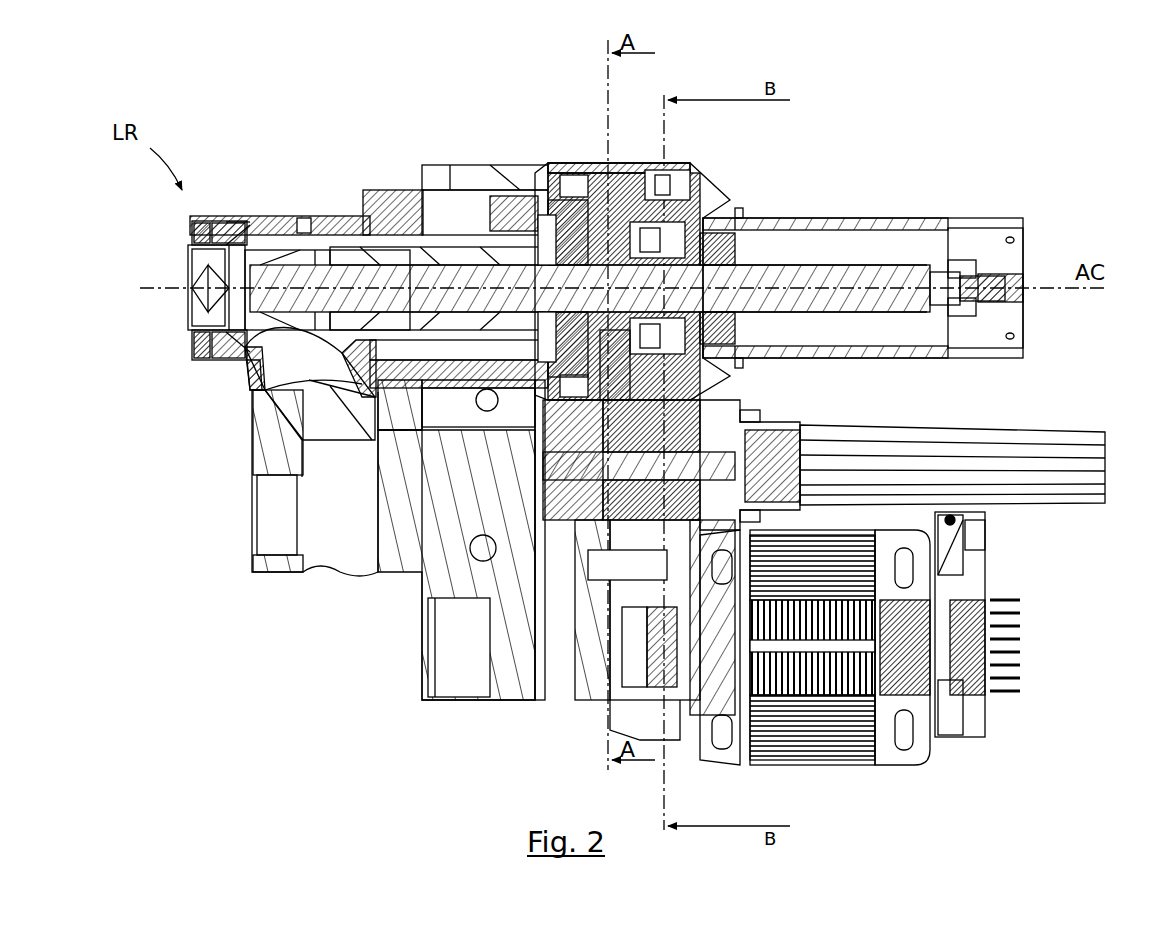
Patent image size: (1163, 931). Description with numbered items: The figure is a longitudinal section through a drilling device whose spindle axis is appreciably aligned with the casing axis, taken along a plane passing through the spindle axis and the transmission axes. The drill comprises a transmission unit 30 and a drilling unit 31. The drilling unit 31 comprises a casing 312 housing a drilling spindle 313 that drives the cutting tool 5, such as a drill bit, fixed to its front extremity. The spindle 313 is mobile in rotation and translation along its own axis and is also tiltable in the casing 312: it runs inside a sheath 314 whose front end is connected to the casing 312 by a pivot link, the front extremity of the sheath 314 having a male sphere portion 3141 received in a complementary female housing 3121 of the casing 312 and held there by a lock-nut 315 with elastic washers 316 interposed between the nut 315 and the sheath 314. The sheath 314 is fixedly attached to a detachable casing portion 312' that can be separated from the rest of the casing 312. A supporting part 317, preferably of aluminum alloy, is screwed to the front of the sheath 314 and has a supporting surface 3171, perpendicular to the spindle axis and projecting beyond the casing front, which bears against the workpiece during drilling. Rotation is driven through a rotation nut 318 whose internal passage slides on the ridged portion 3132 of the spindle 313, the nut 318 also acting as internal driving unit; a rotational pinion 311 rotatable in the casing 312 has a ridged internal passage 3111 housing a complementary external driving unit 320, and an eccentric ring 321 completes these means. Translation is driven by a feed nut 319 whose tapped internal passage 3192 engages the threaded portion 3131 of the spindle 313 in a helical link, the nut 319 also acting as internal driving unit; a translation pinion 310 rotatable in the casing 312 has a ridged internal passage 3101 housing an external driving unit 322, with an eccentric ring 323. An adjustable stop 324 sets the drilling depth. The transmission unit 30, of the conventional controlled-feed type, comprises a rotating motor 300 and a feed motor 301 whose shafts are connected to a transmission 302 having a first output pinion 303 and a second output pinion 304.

The cutting tool 5 is at (200, 280).
The transmission unit 30 is at (528, 722).
The drilling unit 31 is at (848, 110).
The rotating motor 300 is at (905, 760).
The feed motor 301 is at (1080, 440).
The transmission 302 is at (487, 600).
The first output pinion 303 is at (535, 500).
The second output pinion 304 is at (760, 440).
The translation pinion 310 is at (533, 172).
The ridged internal passage 3101 is at (580, 165).
The rotational pinion 311 is at (628, 172).
The ridged internal passage 3111 is at (760, 420).
The casing 312 is at (863, 248).
The detachable casing portion 312' is at (369, 243).
The female housing 3121 is at (245, 232).
The drilling spindle 313 is at (860, 220).
The threaded portion 3131 is at (725, 250).
The ridged portion 3132 is at (760, 262).
The sheath 314 is at (322, 240).
The sphere portion 3141 is at (210, 358).
The lock-nut 315 is at (190, 362).
The elastic washers 316 is at (190, 347).
The supporting part 317 is at (232, 215).
The supporting surface 3171 is at (188, 295).
The rotation nut 318 is at (690, 352).
The feed nut 319 is at (548, 215).
The tapped internal passage 3192 is at (545, 195).
The external driving unit 320 is at (680, 200).
The eccentric ring 321 is at (680, 215).
The external driving unit 322 is at (535, 445).
The eccentric ring 323 is at (575, 300).
The adjustable stop 324 is at (980, 248).